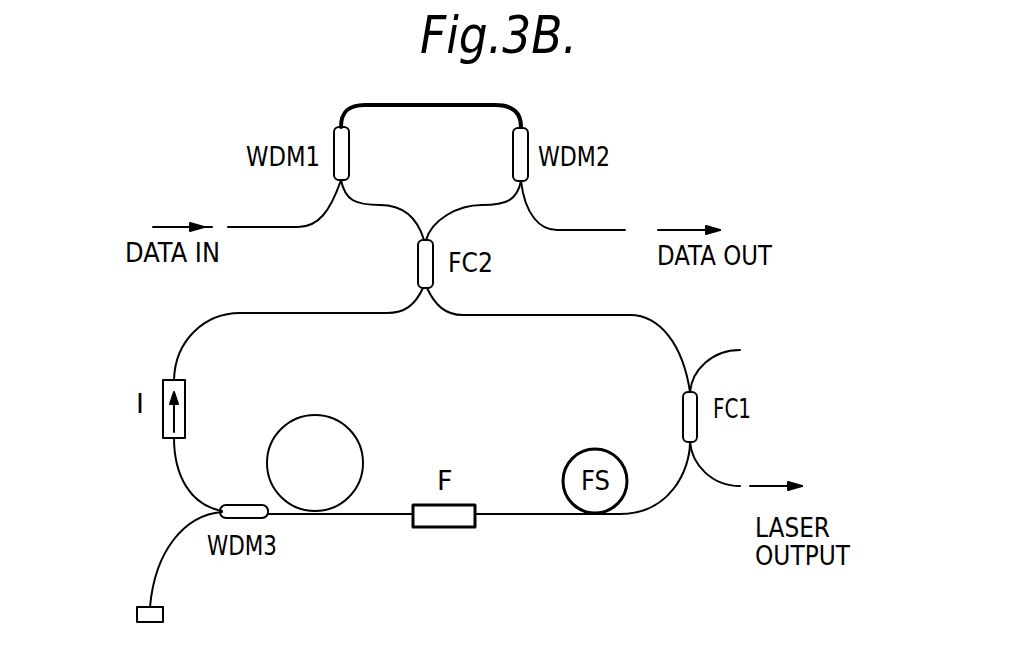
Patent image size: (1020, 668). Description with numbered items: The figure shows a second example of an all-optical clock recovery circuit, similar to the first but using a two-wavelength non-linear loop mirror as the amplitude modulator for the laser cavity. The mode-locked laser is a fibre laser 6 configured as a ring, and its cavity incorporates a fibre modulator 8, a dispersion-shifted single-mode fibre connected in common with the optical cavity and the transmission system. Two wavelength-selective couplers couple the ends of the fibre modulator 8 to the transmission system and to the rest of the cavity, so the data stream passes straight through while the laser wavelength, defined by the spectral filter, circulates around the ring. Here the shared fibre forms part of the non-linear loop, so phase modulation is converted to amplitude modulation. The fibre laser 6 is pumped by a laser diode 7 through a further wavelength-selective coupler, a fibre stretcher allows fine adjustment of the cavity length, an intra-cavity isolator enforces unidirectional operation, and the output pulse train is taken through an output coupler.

The fibre laser 6 is at (340, 423).
The laser diode 7 is at (163, 614).
The fibre modulator 8 is at (513, 117).